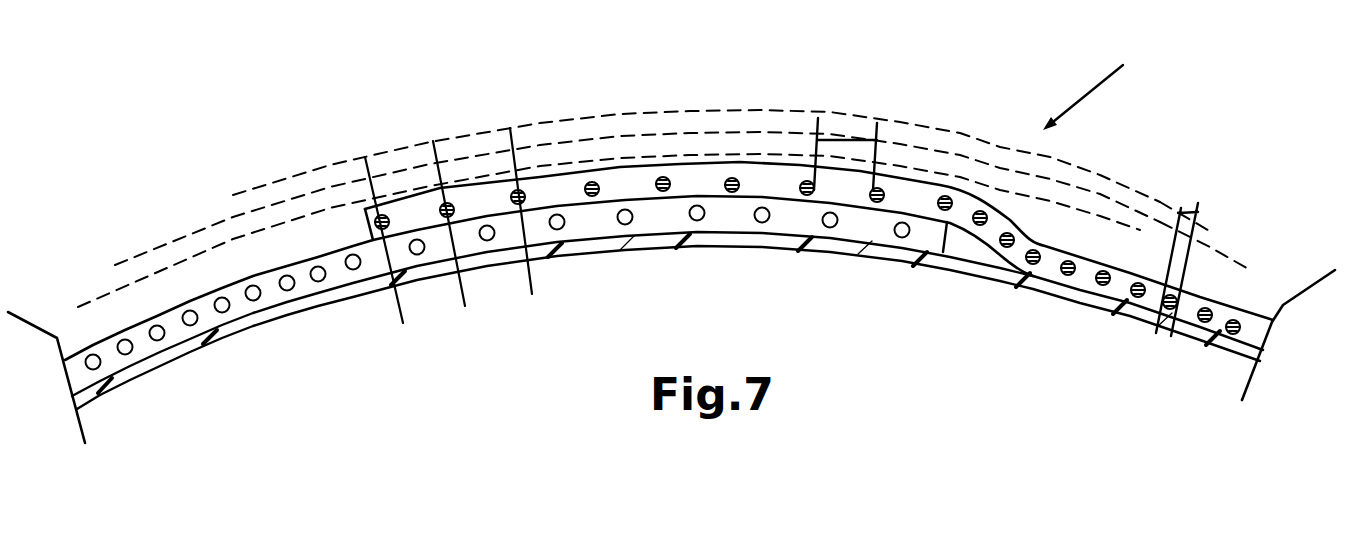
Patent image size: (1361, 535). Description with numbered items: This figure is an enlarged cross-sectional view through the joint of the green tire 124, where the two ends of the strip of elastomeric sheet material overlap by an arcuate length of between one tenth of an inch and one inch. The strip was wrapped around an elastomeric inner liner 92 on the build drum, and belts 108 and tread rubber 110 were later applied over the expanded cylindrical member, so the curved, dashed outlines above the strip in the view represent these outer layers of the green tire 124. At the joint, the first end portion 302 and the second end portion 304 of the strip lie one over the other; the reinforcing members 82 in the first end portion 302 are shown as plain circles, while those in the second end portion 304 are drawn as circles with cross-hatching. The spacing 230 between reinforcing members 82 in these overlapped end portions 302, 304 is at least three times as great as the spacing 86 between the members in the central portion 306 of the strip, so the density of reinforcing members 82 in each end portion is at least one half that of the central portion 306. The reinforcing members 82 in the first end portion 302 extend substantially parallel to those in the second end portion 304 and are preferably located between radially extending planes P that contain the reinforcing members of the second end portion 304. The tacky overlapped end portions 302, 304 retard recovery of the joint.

The reinforcing members 82 is at (285, 277).
The spacing 86 is at (1181, 210).
The elastomeric inner liner 92 is at (180, 350).
The belts 108 is at (1217, 244).
The tread rubber 110 is at (1100, 180).
The green tire 124 is at (1110, 91).
The spacing 230 is at (843, 140).
The first end portion 302 is at (857, 227).
The second end portion 304 is at (733, 178).
The central portion 306 is at (77, 378).
The radially extending planes P is at (405, 307).